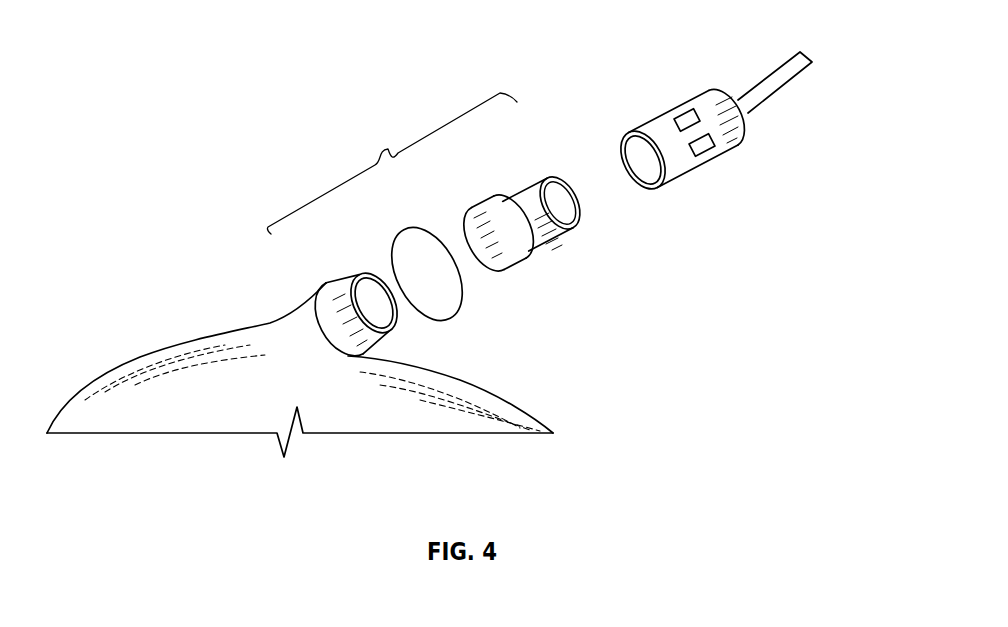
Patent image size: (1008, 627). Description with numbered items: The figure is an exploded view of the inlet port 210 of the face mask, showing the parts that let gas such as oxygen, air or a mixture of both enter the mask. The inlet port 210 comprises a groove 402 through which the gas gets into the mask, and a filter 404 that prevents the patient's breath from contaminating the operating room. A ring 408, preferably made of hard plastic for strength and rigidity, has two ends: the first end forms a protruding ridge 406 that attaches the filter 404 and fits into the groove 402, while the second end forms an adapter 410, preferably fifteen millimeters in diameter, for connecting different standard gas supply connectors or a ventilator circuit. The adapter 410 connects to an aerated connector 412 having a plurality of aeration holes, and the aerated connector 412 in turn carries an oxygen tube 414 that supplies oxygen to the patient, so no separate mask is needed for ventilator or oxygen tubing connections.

The inlet port 210 is at (403, 118).
The groove 402 is at (330, 284).
The filter 404 is at (490, 360).
The protruding ridge 406 is at (557, 293).
The ring 408 is at (603, 260).
The adapter 410 is at (556, 173).
The aerated connector 412 is at (747, 177).
The oxygen tube 414 is at (820, 108).